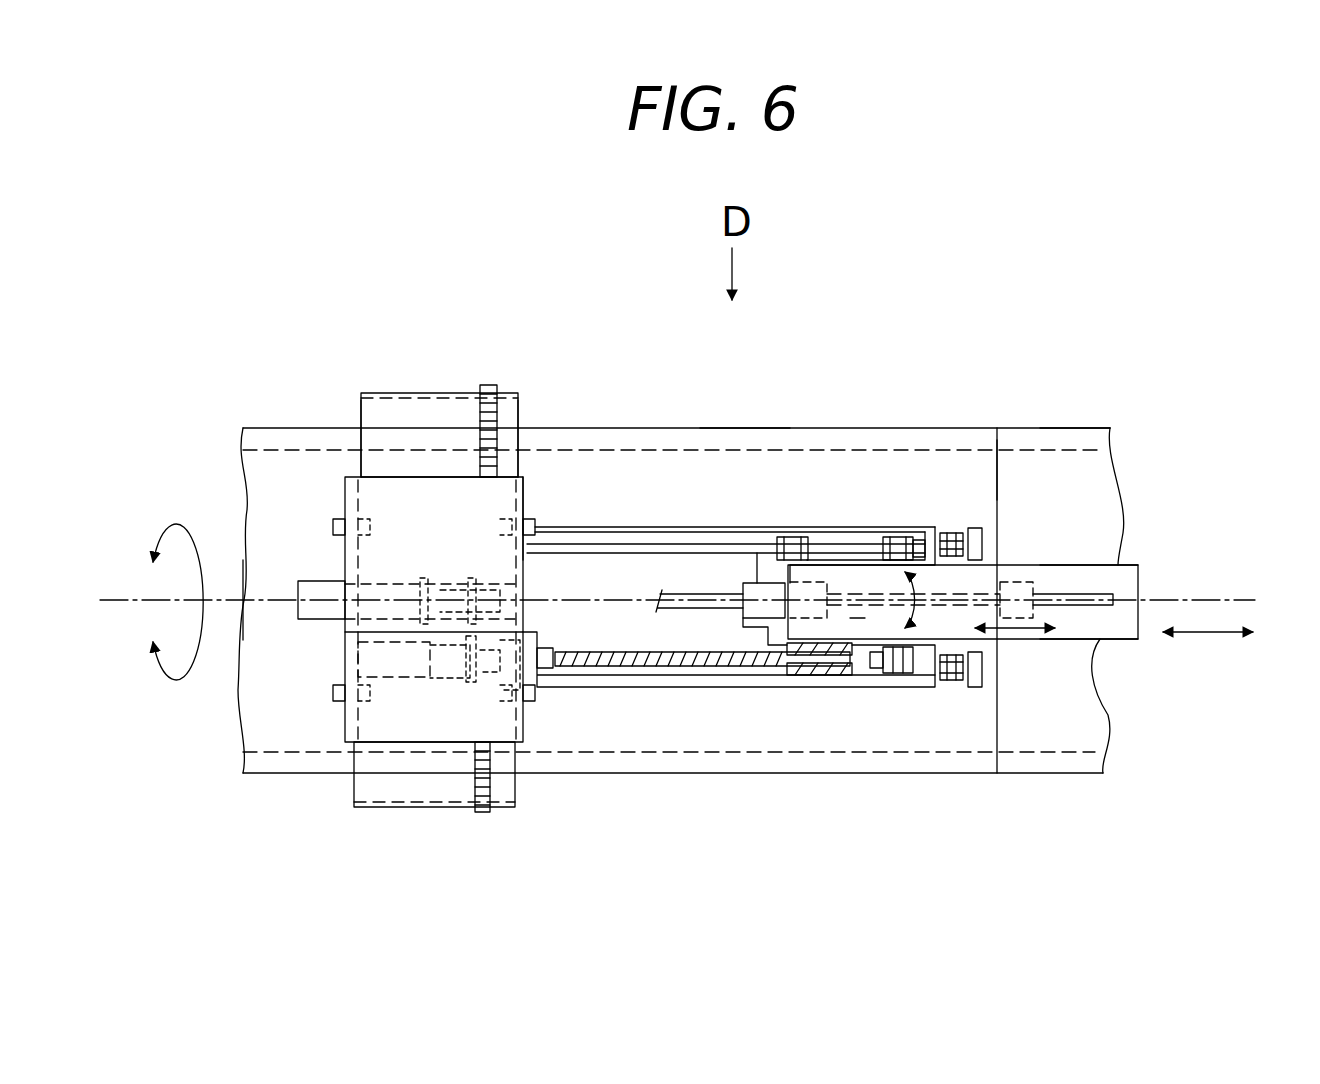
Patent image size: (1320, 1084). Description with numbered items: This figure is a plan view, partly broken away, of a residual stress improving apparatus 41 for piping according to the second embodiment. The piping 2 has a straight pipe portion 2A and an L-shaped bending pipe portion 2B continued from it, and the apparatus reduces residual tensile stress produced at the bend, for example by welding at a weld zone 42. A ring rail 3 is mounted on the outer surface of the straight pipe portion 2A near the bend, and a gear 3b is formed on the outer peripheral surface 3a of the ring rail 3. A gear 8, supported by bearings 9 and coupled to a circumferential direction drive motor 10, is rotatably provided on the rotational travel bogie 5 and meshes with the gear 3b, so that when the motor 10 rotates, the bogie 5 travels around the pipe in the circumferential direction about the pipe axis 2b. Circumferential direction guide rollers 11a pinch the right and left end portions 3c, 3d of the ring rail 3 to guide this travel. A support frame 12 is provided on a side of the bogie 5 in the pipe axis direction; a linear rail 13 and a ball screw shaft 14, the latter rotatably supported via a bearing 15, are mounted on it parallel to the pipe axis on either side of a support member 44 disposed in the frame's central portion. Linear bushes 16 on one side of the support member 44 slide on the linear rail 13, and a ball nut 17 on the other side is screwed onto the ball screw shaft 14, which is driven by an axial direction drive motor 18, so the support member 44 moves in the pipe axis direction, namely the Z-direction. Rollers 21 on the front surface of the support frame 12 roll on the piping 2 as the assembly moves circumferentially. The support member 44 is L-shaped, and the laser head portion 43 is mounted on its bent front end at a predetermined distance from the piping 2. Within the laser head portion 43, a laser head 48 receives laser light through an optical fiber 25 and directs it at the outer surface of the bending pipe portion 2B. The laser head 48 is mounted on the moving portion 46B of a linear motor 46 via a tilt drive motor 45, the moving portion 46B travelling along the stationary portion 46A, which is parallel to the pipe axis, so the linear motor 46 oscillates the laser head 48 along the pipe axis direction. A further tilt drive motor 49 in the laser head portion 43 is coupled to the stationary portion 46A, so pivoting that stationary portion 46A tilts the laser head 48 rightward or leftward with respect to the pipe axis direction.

The piping 2 is at (865, 422).
The straight pipe portion 2A is at (745, 422).
The bending pipe portion 2B is at (1092, 422).
The pipe axis 2b is at (233, 598).
The ring rail 3 is at (525, 405).
The outer peripheral surface of ring rail 3a is at (450, 410).
The gear 3b is at (492, 400).
The right end portion of ring rail 3c is at (366, 413).
The left end portion of ring rail 3d is at (532, 410).
The rotational travel bogie 5 is at (530, 482).
The gear 8 is at (495, 580).
The bearings 9 is at (500, 645).
The circumferential direction drive motor 10 is at (305, 622).
The circumferential direction guide rollers 11a is at (350, 522).
The support frame 12 is at (870, 527).
The linear rail 13 is at (758, 546).
The ball screw shaft 14 is at (712, 668).
The bearing 15 is at (535, 690).
The linear bushes 16 is at (797, 540).
The ball nut 17 is at (800, 647).
The axial direction drive motor 18 is at (356, 660).
The rollers 21 is at (978, 545).
The optical fiber 25 is at (676, 615).
The residual stress improving apparatus for piping 41 is at (948, 545).
The weld zone 42 is at (1000, 470).
The laser head portion 43 is at (1140, 580).
The support member 44 is at (790, 658).
The tilt drive motor 45 is at (1040, 597).
The linear motor 46 is at (1162, 697).
The linear motor stationary portion 46A is at (1088, 603).
The linear motor moving portion 46B is at (1078, 638).
The laser head 48 is at (1030, 590).
The tilt drive motor 49 is at (858, 622).
The Z-direction Z is at (1208, 634).